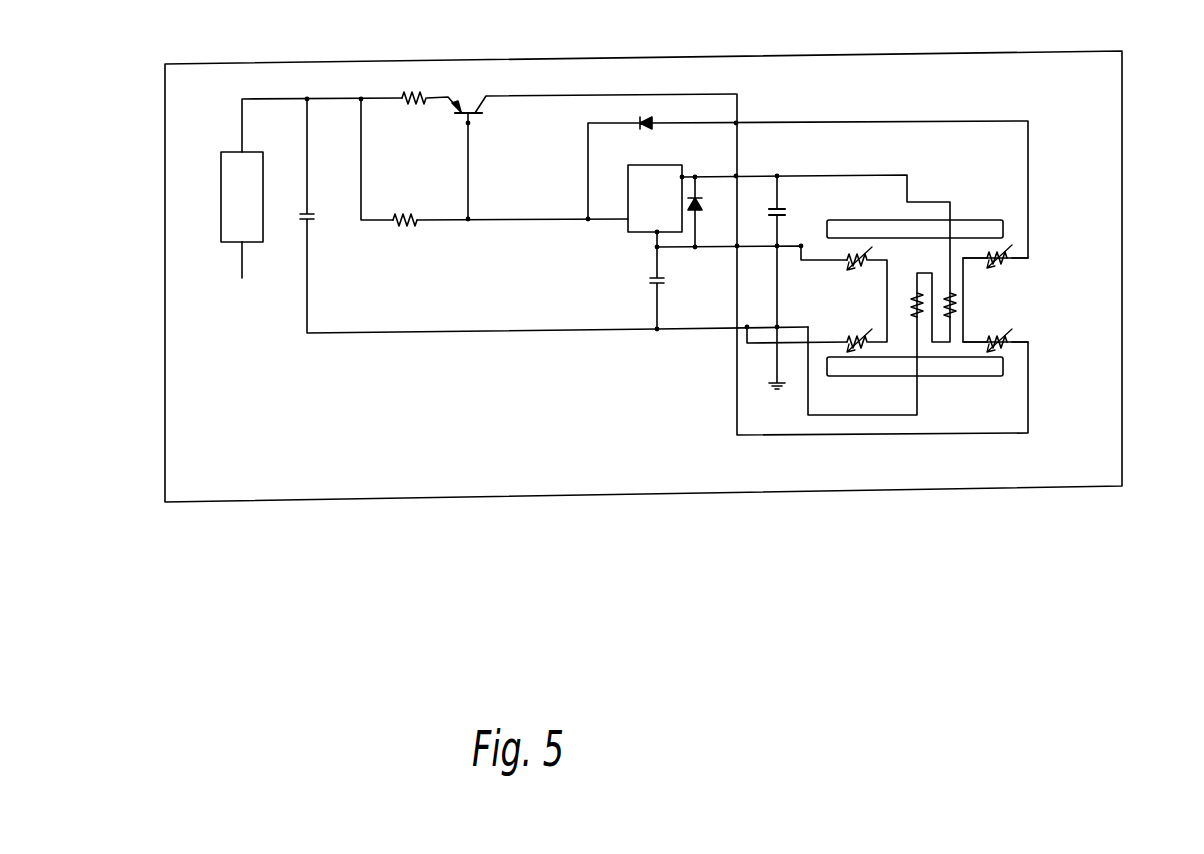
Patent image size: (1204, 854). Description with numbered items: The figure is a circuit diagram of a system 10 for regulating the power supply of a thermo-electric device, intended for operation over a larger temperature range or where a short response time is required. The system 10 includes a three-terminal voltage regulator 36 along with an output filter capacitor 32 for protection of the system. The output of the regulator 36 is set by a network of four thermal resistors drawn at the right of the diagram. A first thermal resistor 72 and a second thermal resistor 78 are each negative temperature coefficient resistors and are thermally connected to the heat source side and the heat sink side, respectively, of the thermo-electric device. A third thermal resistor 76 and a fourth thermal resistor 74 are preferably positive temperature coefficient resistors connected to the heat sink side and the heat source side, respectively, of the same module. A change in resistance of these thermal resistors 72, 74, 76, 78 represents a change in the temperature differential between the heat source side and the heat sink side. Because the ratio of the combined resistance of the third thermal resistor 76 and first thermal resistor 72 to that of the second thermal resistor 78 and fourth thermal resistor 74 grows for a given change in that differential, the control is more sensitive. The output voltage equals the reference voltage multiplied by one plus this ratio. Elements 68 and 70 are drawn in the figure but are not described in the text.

The system 10 is at (255, 593).
The output filter capacitor 32 is at (778, 203).
The three-terminal voltage regulator 36 is at (660, 183).
The heater resistor 68 is at (953, 318).
The sensing resistor 70 is at (901, 327).
The first thermal resistor 72 is at (860, 274).
The fourth thermal resistor 74 is at (1018, 253).
The third thermal resistor 76 is at (858, 352).
The second thermal resistor 78 is at (1000, 347).